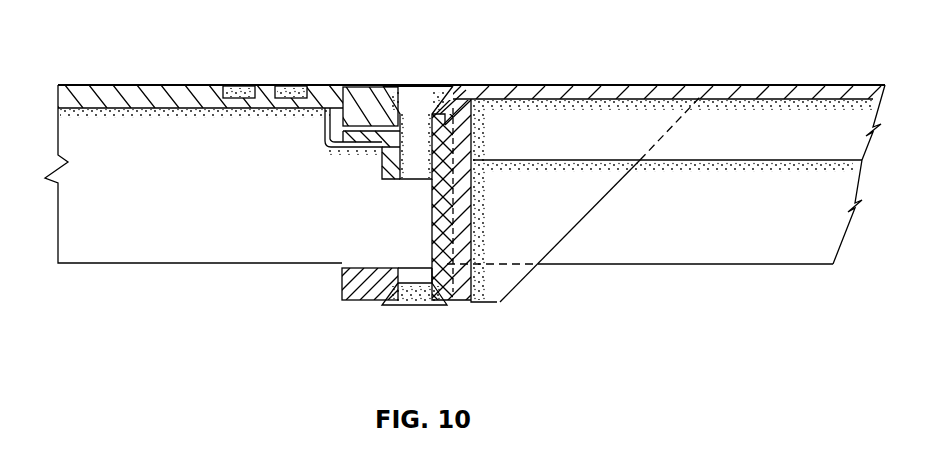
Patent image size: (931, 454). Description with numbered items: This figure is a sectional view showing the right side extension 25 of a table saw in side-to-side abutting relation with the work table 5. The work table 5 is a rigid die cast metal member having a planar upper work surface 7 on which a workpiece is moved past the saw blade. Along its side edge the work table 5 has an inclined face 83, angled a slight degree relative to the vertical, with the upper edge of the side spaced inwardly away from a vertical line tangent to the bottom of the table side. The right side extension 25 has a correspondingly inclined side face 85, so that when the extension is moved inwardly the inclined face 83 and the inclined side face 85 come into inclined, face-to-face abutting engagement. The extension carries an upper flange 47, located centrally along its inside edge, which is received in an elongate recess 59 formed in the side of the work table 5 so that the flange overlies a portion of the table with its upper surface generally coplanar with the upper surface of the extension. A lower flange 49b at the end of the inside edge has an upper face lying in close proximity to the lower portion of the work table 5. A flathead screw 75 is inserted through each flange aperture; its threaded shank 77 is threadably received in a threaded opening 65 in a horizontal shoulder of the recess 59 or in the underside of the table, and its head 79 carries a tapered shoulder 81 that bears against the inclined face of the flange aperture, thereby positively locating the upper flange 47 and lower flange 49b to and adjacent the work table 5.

The work table 5 is at (222, 269).
The upper work surface 7 is at (76, 84).
The right side extension 25 is at (652, 275).
The upper flange 47 is at (352, 86).
The lower flange 49b is at (358, 302).
The elongate recess 59 is at (362, 127).
The threaded opening 65 is at (407, 186).
The flathead screw 75 is at (423, 98).
The threaded shank 77 is at (412, 140).
The head 79 is at (418, 85).
The tapered shoulder 81 is at (447, 98).
The inclined face 83 is at (435, 230).
The inclined side face 85 is at (478, 210).